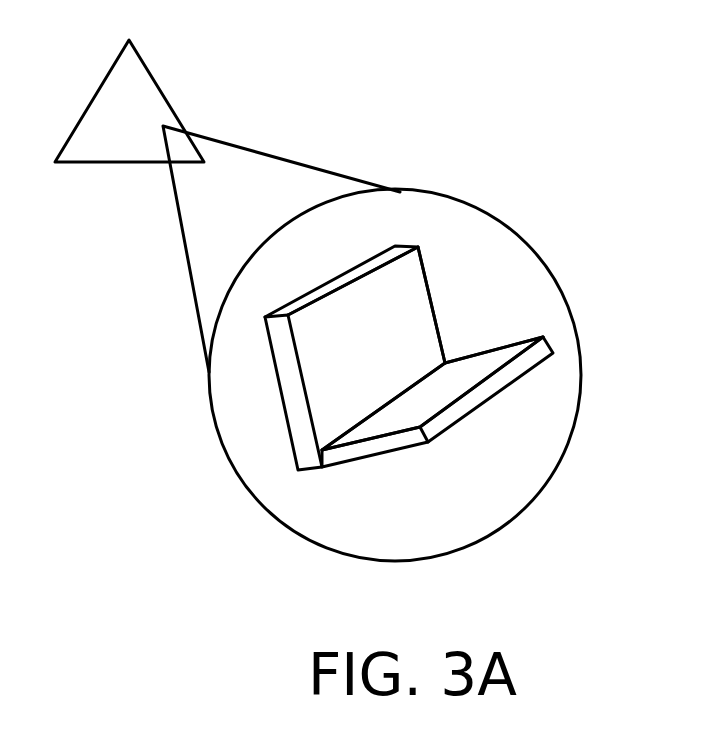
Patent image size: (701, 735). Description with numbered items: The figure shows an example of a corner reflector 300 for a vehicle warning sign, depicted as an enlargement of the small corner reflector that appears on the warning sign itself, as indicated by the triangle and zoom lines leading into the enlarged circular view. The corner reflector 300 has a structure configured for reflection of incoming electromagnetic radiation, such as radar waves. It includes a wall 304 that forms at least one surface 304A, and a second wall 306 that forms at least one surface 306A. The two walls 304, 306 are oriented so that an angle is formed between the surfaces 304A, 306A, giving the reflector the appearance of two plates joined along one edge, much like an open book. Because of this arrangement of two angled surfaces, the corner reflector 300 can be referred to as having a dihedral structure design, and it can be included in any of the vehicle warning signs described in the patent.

The corner reflector 300 is at (398, 232).
The wall 304 is at (275, 373).
The surface 304A is at (393, 356).
The wall 306 is at (360, 462).
The surface 306A is at (474, 372).